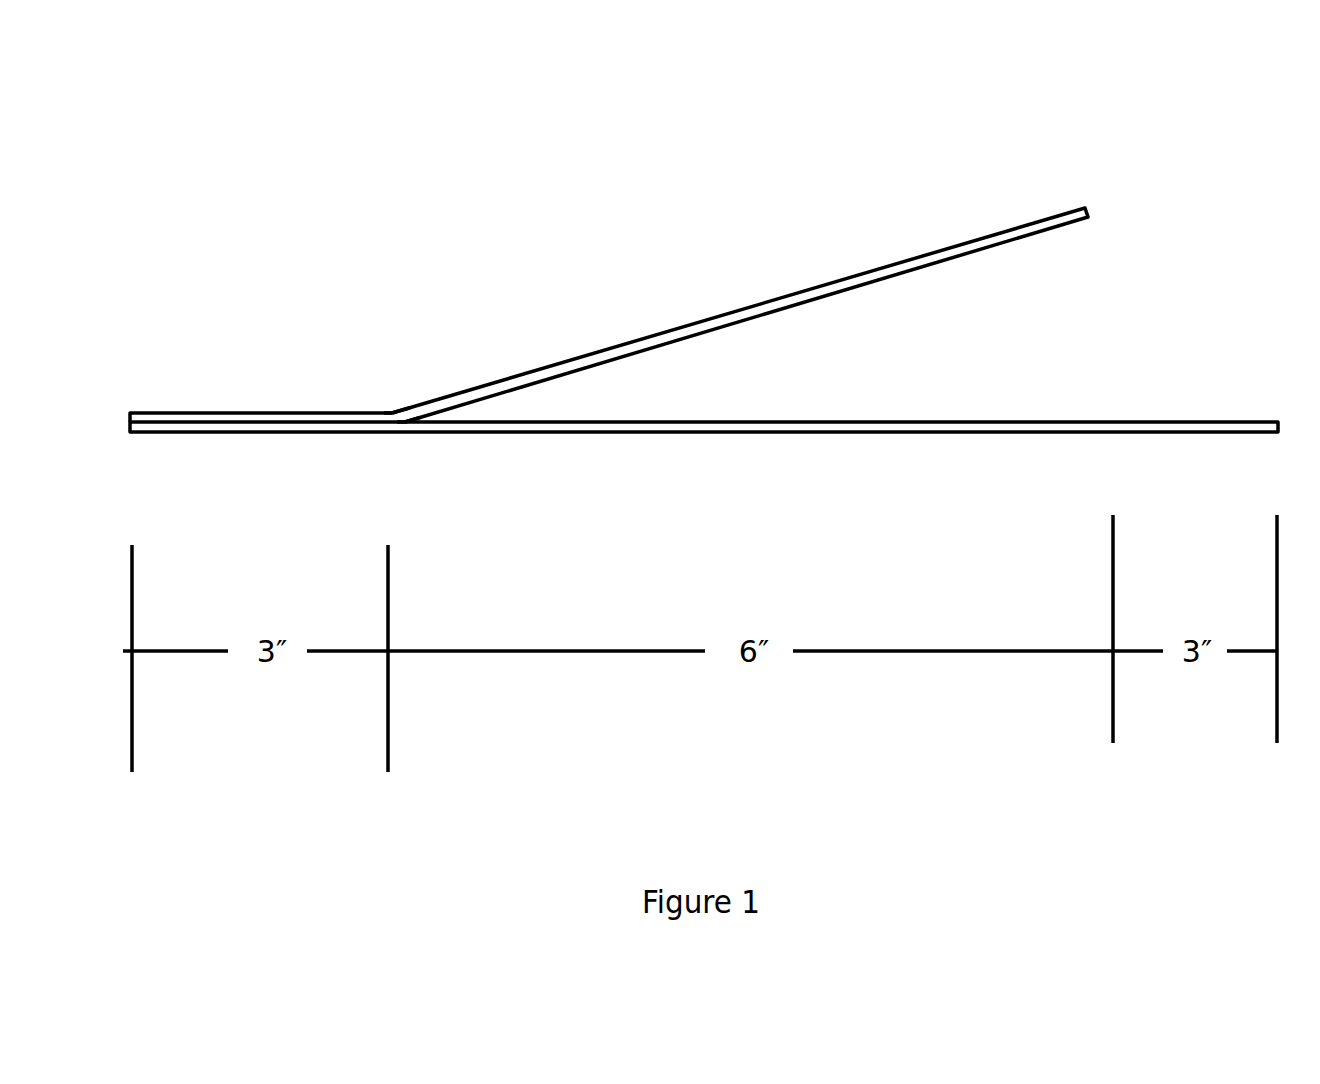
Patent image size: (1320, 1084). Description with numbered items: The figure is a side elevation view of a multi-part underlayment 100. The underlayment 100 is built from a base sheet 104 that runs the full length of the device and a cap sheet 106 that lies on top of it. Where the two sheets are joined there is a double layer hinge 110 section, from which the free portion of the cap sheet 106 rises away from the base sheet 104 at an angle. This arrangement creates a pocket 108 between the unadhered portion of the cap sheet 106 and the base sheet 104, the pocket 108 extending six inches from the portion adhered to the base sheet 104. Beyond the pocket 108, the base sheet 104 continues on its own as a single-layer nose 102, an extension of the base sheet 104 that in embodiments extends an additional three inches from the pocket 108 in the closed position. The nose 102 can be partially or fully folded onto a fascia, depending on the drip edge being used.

The multi-part underlayment 100 is at (258, 203).
The single-layer nose 102 is at (1222, 433).
The base sheet 104 is at (258, 433).
The cap sheet 106 is at (775, 302).
The pocket 108 is at (930, 352).
The double layer hinge 110 is at (392, 413).